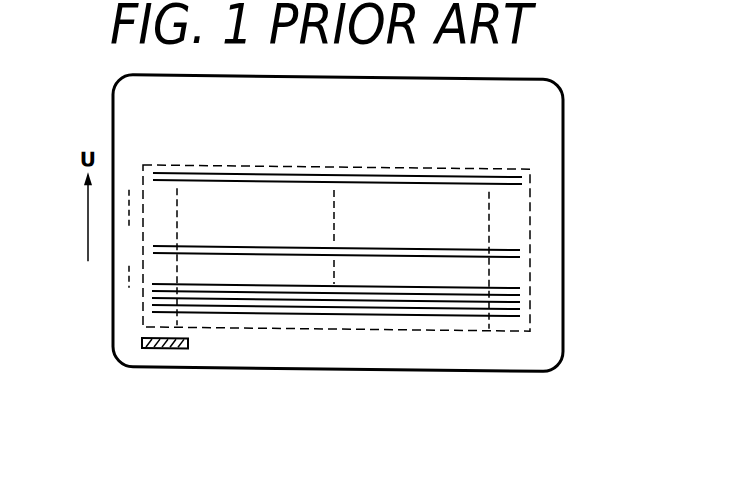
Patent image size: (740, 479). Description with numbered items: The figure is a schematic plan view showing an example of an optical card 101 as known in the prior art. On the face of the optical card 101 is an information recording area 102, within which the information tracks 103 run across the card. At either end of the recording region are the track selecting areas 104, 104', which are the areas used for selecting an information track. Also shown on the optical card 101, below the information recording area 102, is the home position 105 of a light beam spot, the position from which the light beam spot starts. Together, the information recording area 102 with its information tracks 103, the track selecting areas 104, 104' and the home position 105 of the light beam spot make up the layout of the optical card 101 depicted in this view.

The optical card 101 is at (565, 148).
The information recording area 102 is at (276, 191).
The information tracks 103 is at (502, 246).
The track selecting area 104 is at (272, 236).
The track selecting area 104' is at (386, 248).
The home position of a light beam spot 105 is at (167, 350).